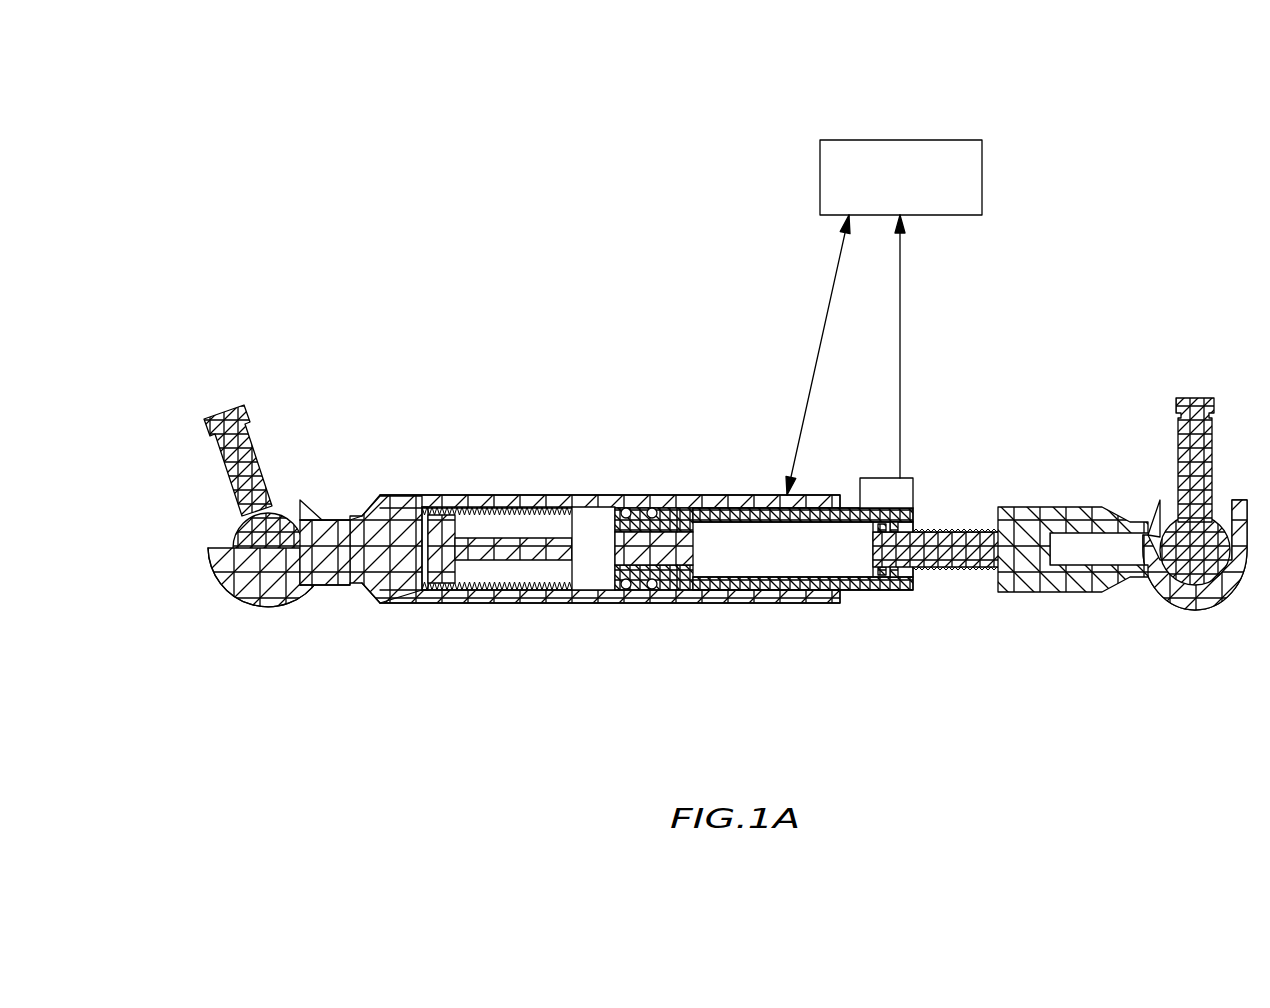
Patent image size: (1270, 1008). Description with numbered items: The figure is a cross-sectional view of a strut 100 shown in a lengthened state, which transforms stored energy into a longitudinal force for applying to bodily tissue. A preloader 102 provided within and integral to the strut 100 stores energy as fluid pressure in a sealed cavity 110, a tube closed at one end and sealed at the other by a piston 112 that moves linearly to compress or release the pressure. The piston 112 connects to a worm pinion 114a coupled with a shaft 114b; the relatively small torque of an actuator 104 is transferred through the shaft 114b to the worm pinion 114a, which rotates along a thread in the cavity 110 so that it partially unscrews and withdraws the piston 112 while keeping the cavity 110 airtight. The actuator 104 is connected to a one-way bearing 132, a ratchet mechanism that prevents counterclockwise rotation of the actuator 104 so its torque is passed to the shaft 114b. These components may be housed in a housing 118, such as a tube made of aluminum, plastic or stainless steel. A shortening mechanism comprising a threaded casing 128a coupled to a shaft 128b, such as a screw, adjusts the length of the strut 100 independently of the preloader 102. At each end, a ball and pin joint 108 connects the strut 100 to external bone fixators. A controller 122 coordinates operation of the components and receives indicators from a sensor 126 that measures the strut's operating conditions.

The strut 100 is at (300, 325).
The preloader 102 is at (525, 507).
The actuator 104 is at (758, 507).
The ball and pin joint 108 is at (227, 452).
The sealed cavity 110 is at (471, 507).
The piston 112 is at (585, 575).
The worm pinion 114a is at (440, 585).
The shaft 114b is at (470, 560).
The housing 118 is at (888, 592).
The controller 122 is at (915, 140).
The sensor 126 is at (905, 478).
The threaded casing 128a is at (1073, 588).
The shaft 128b is at (962, 580).
The one-way bearing 132 is at (762, 590).